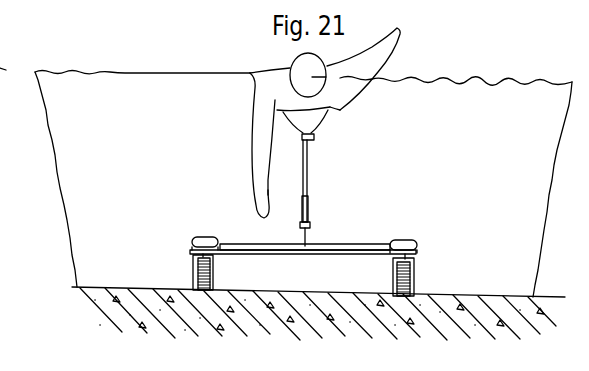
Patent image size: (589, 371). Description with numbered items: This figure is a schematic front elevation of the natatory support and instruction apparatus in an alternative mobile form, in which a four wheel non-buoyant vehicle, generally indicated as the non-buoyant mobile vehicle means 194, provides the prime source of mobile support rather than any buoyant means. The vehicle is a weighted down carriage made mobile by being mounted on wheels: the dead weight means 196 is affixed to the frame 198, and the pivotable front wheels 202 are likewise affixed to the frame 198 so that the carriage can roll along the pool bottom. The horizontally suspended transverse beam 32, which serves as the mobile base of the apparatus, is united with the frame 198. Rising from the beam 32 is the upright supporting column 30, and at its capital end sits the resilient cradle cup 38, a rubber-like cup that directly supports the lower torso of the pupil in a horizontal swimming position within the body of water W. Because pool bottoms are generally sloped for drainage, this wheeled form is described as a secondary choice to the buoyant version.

The upright supporting column 30 is at (313, 191).
The horizontally suspended transverse beam 32 is at (336, 243).
The resilient cradle cup 38 is at (329, 118).
The non-buoyant mobile vehicle means 194 is at (222, 233).
The dead weight means 196 is at (206, 237).
The frame 198 is at (190, 251).
The front wheels 202 is at (212, 268).
The body of water W is at (88, 235).